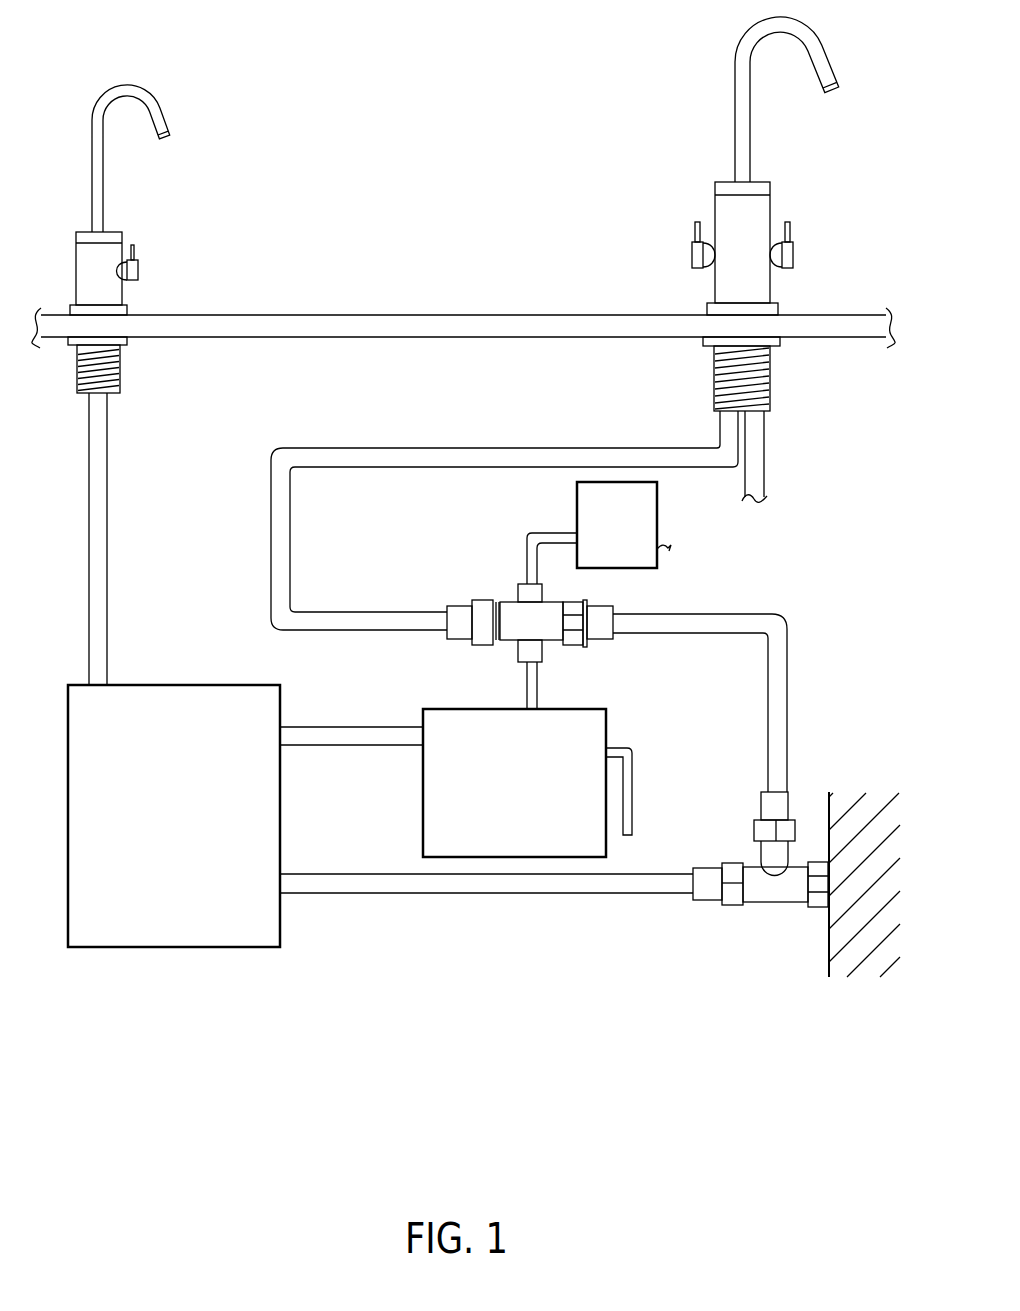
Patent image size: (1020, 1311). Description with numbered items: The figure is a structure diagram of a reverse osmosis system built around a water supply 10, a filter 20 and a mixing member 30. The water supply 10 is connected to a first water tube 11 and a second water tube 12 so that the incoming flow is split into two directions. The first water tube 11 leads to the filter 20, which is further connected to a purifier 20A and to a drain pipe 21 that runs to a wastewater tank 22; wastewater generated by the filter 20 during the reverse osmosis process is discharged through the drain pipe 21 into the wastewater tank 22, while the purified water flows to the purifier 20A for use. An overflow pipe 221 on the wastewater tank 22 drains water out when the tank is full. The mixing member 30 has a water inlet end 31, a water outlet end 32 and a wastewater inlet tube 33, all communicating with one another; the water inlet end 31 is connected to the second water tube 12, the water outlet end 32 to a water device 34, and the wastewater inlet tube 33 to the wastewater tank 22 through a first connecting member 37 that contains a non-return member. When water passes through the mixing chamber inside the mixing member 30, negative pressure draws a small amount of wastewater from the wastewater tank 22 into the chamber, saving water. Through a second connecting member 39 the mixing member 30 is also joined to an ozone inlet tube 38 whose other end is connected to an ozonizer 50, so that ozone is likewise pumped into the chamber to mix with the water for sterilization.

The water supply 10 is at (787, 907).
The first water tube 11 is at (503, 890).
The second water tube 12 is at (787, 705).
The filter 20 is at (183, 947).
The purifier 20A is at (118, 235).
The drain pipe 21 is at (370, 742).
The wastewater tank 22 is at (423, 825).
The overflow pipe 221 is at (628, 812).
The mixing member 30 is at (586, 629).
The water inlet end 31 is at (578, 607).
The water outlet end 32 is at (485, 603).
The wastewater inlet tube 33 is at (523, 678).
The water device 34 is at (716, 182).
The first connecting member 37 is at (543, 653).
The ozone inlet tube 38 is at (560, 533).
The second connecting member 39 is at (517, 592).
The ozonizer 50 is at (657, 507).